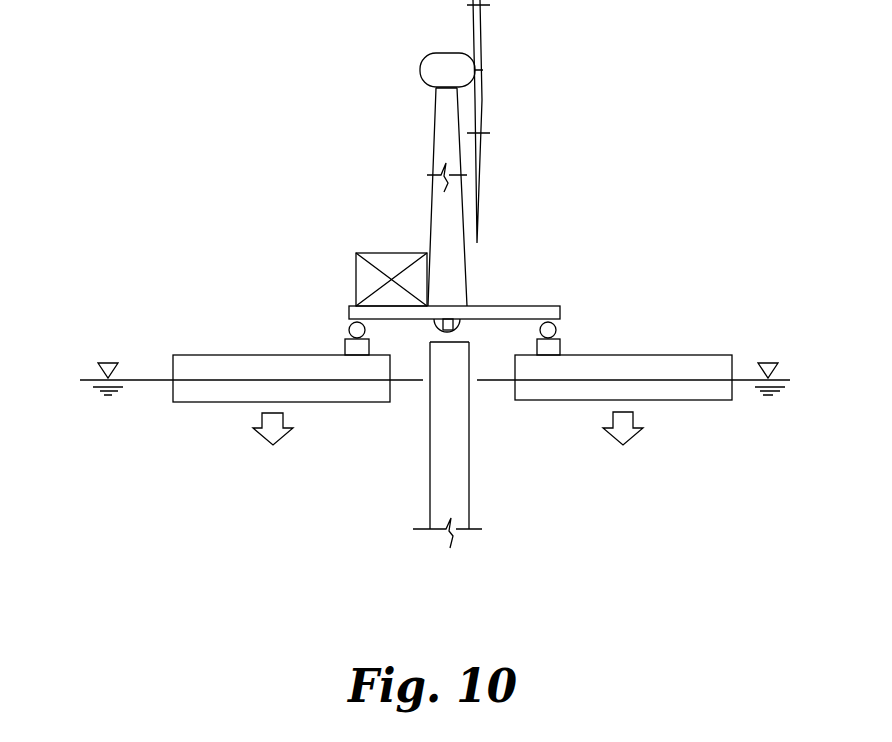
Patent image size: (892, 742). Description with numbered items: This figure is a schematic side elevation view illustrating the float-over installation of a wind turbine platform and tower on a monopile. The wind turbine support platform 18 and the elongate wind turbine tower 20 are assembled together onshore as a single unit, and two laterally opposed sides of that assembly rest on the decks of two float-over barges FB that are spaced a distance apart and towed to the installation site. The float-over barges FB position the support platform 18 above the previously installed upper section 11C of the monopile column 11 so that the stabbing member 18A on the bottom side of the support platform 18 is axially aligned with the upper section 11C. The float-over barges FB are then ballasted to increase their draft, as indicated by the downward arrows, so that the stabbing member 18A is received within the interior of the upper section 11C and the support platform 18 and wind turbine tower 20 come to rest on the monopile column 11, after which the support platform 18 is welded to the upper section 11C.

The wind turbine tower 20 is at (430, 163).
The wind turbine support platform 18 is at (517, 306).
The stabbing member 18A is at (457, 330).
The float-over barges FB is at (233, 360).
The monopile column 11 is at (442, 445).
The upper section of the monopile column 11C is at (425, 498).